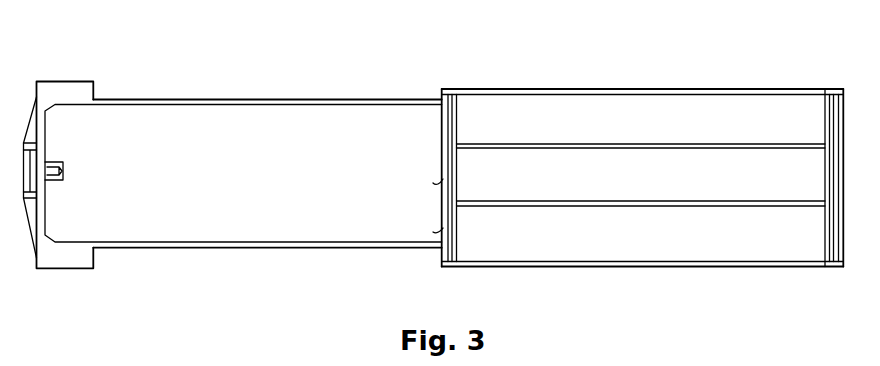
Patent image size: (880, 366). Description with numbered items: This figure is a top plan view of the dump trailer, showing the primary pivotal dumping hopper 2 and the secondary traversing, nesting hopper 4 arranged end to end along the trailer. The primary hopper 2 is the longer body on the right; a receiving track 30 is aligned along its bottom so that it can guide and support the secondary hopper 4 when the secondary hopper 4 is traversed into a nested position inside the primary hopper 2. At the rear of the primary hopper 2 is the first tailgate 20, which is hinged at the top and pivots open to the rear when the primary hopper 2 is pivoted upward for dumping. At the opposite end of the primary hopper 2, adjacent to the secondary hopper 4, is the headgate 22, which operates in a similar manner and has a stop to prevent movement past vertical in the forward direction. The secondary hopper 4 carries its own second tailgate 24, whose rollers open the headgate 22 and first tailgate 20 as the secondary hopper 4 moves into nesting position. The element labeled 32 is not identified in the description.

The primary pivotal dumping hopper 2 is at (516, 87).
The secondary traversing, nesting hopper 4 is at (266, 98).
The first tailgate 20 is at (847, 219).
The headgate 22 is at (459, 225).
The second tailgate 24 is at (440, 199).
The receiving track 30 is at (660, 142).
The end fitting flanges 32 is at (96, 82).